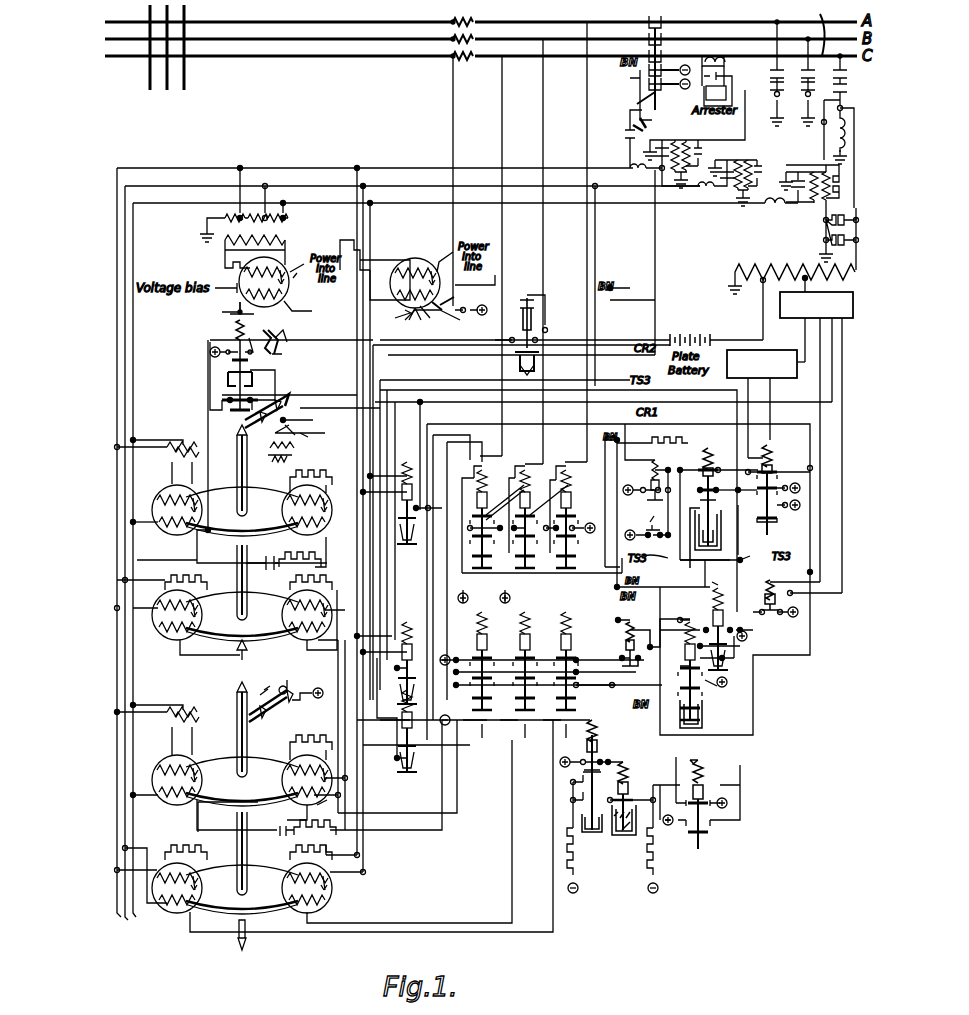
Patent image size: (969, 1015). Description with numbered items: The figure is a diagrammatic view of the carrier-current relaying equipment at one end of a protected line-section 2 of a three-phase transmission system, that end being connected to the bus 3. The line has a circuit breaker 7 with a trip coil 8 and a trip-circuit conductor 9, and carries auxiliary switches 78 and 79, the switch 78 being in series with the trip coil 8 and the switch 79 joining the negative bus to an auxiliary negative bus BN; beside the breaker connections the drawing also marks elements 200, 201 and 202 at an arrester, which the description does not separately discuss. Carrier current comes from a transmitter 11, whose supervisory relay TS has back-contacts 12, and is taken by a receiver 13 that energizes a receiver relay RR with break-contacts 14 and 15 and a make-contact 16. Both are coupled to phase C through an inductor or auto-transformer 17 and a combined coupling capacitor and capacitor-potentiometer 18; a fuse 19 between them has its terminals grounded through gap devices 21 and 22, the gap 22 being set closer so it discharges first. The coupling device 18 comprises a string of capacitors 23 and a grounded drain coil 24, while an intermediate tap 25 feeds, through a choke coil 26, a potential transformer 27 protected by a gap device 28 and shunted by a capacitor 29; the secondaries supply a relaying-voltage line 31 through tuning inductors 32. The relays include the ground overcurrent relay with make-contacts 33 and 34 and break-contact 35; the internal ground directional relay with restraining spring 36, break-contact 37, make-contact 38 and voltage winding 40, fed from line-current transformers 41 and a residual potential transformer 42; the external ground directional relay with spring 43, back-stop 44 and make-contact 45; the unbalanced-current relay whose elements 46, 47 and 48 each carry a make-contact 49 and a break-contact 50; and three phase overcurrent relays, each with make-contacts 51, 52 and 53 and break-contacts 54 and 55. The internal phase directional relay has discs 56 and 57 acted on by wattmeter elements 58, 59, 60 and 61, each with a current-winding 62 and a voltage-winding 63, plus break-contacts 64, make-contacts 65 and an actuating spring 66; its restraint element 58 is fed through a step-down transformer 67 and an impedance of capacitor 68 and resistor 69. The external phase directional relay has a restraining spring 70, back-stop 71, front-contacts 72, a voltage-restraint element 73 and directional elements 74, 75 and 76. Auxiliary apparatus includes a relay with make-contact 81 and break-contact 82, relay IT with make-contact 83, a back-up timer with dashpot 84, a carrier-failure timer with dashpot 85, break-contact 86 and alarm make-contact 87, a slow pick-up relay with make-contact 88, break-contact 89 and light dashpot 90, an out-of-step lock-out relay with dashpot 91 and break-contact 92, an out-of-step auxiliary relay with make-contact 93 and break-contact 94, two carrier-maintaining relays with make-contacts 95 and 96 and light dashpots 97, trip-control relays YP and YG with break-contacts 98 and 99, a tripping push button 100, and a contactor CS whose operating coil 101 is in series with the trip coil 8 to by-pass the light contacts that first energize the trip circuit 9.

The line-section 2 is at (826, 30).
The bus 3 is at (214, 73).
The circuit breaker 7 is at (642, 38).
The trip coil 8 is at (632, 128).
The trip-circuit conductor 9 is at (630, 140).
The transmitter 11 is at (848, 318).
The back-contacts of transmitter supervisory relay 12 is at (778, 618).
The receiver 13 is at (788, 382).
The break-contact of receiver relay 14 is at (788, 460).
The break-contact of receiver relay 15 is at (748, 500).
The make-contact of receiver relay 16 is at (768, 525).
The inductor or auto-transformer 17 is at (788, 268).
The combined coupling capacitor and capacitor-potentiometer 18 is at (872, 97).
The fuse 19 is at (870, 226).
The gap device 21 is at (840, 212).
The gap device 22 is at (837, 244).
The string of capacitors 23 is at (845, 72).
The drain coil 24 is at (846, 125).
The intermediate tap 25 is at (802, 73).
The choke coil 26 is at (822, 132).
The potential transformer 27 is at (812, 206).
The gap device 28 is at (818, 185).
The capacitor 29 is at (802, 172).
The relaying-voltage line 31 is at (403, 170).
The inductors 32 is at (778, 208).
The make-contact of ground overcurrent relay 33 is at (230, 362).
The make-contact of ground overcurrent relay 34 is at (218, 410).
The break-contact of ground overcurrent relay 35 is at (226, 378).
The restraining spring 36 is at (282, 310).
The break-contact of ground directional relay 37 is at (283, 352).
The make-contact of ground directional relay 38 is at (240, 356).
The voltage winding 40 is at (292, 240).
The line-current transformers 41 is at (463, 60).
The residual potential transformer 42 is at (288, 218).
The restraining spring 43 is at (390, 283).
The back-stop 44 is at (444, 337).
The make-contact of external ground directional relay 45 is at (460, 306).
The element of unbalanced-current relay 46 is at (476, 476).
The element of unbalanced-current relay 47 is at (511, 517).
The element of unbalanced-current relay 48 is at (554, 517).
The make-contact of unbalanced-current relay element 49 is at (598, 510).
The break-contact of unbalanced-current relay element 50 is at (572, 573).
The make-contact of phase overcurrent relay 51 is at (590, 648).
The make-contact of phase overcurrent relay 52 is at (610, 690).
The make-contact of phase overcurrent relay 53 is at (502, 722).
The break-contact of phase overcurrent relay 54 is at (604, 672).
The break-contact of phase overcurrent relay 55 is at (586, 626).
The disc 56 is at (256, 480).
The disc 57 is at (224, 608).
The wattmeter element 58 is at (165, 535).
The wattmeter element 59 is at (322, 488).
The wattmeter element 60 is at (309, 630).
The wattmeter element 61 is at (191, 643).
The current-winding 62 is at (168, 492).
The voltage-winding 63 is at (175, 537).
The break-contacts of internal phase directional relay 64 is at (300, 408).
The make-contacts of internal phase directional relay 65 is at (295, 440).
The actuating spring 66 is at (292, 458).
The step-down transformer 67 is at (168, 454).
The capacitor 68 is at (268, 555).
The resistor 69 is at (302, 552).
The restraining spring 70 is at (242, 683).
The back-stop 71 is at (280, 687).
The front-contacts 72 is at (287, 708).
The voltage-restraint element 73 is at (180, 805).
The power-directional wattmeter element 74 is at (309, 777).
The power-directional wattmeter element 75 is at (333, 910).
The power-directional wattmeter element 76 is at (176, 913).
The auxiliary switch 78 is at (663, 88).
The auxiliary switch 79 is at (636, 95).
The make-contact of auxiliary relay X1 81 is at (730, 645).
The break-contact of auxiliary relay X1 82 is at (710, 600).
The make-contact of auxiliary relay IT 83 is at (642, 660).
The dashpot 84 is at (705, 718).
The dashpot 85 is at (708, 542).
The break-contact of carrier-failure timer 86 is at (695, 478).
The make-contact of carrier-failure timer 87 is at (700, 496).
The make-contact of auxiliary relay Y7 88 is at (580, 756).
The break-contact of auxiliary relay Y7 89 is at (560, 788).
The light dashpot 90 is at (590, 838).
The dashpot 91 is at (395, 680).
The break-contact of out-of-step lock-out relay 92 is at (632, 782).
The make-contact of out-of-step auxiliary relay 93 is at (700, 840).
The break-contact of out-of-step auxiliary relay 94 is at (706, 798).
The make-contact of carrier-maintaining relay Y-Ph 95 is at (397, 740).
The make-contact of carrier-maintaining relay Y-Gd 96 is at (540, 352).
The light dashpot 97 is at (540, 370).
The break-contact of trip-control relay YP 98 is at (394, 664).
The break-contact of trip-control relay YG 99 is at (250, 312).
The tripping push button 100 is at (648, 524).
The operating coil of contactor CS 101 is at (645, 465).
The protective gap 200 is at (727, 58).
The capacitor 201 is at (733, 83).
The arrester 202 is at (726, 96).